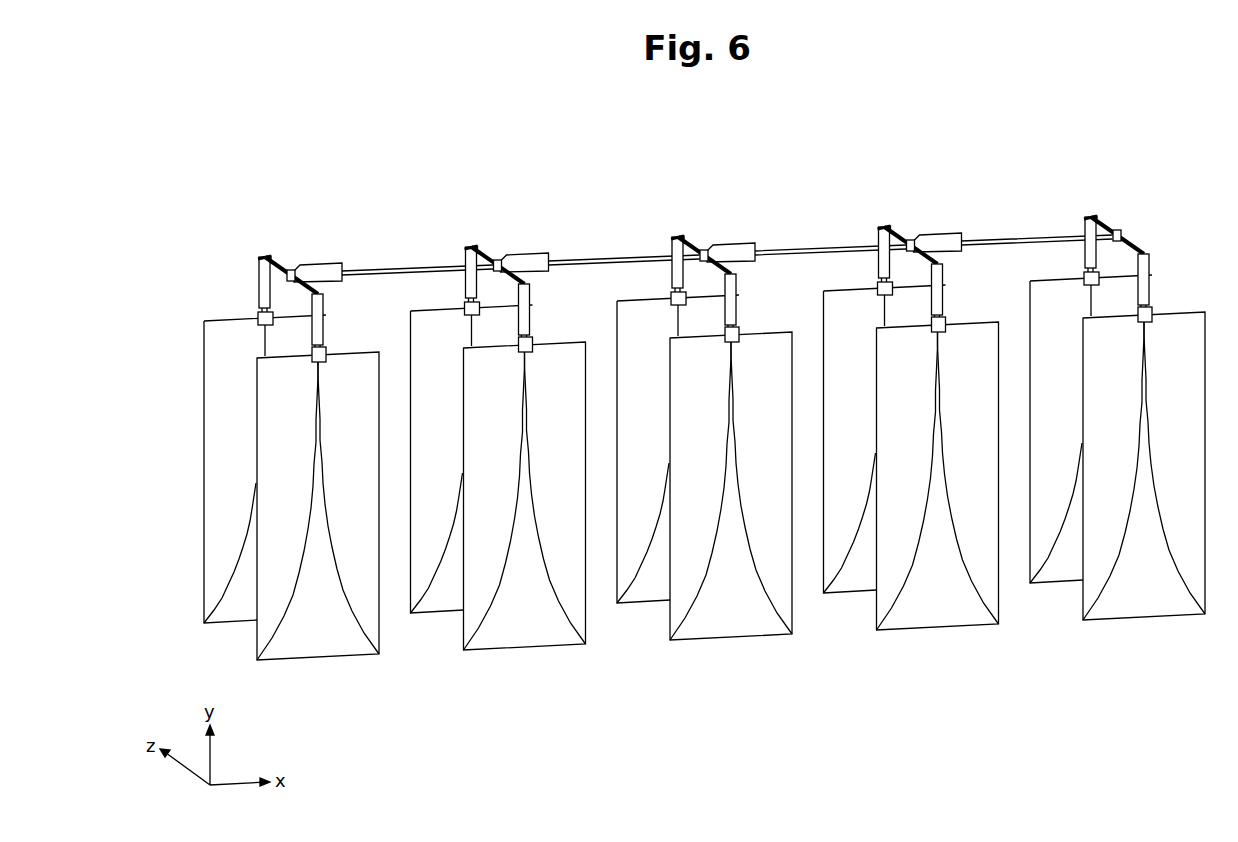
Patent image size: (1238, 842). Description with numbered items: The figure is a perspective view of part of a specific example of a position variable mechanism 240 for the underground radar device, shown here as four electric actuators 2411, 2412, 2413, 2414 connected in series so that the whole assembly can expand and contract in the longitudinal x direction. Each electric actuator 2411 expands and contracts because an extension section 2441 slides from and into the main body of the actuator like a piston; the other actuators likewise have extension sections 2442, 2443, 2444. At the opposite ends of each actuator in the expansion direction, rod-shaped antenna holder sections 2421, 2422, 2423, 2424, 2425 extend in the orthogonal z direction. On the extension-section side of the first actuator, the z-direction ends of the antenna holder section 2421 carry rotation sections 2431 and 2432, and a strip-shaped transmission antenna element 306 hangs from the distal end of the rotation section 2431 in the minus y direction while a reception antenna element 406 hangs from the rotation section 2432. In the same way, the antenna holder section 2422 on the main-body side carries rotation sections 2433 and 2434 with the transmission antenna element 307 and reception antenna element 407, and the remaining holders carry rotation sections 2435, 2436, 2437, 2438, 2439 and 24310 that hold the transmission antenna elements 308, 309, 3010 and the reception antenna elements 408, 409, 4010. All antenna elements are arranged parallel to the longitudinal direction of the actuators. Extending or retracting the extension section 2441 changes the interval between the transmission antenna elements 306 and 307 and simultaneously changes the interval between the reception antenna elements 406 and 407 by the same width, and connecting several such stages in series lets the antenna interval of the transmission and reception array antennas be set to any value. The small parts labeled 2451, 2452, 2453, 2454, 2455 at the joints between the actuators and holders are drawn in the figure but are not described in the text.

The position variable mechanism 240 is at (632, 143).
The transmission antenna element 3010 is at (318, 539).
The transmission antenna element 309 is at (525, 529).
The transmission antenna element 308 is at (731, 519).
The transmission antenna element 307 is at (938, 509).
The transmission antenna element 306 is at (1144, 499).
The reception antenna element 4010 is at (265, 503).
The reception antenna element 409 is at (472, 493).
The reception antenna element 408 is at (678, 483).
The reception antenna element 407 is at (885, 473).
The reception antenna element 406 is at (1091, 463).
The electric actuator 2411 is at (1013, 219).
The electric actuator 2412 is at (806, 229).
The electric actuator 2413 is at (600, 239).
The electric actuator 2414 is at (393, 249).
The antenna holder section 2421 is at (1112, 199).
The antenna holder section 2422 is at (906, 209).
The antenna holder section 2423 is at (699, 219).
The antenna holder section 2424 is at (493, 229).
The antenna holder section 2425 is at (286, 239).
The rotation section 2431 is at (1184, 288).
The rotation section 2432 is at (1051, 251).
The rotation section 2433 is at (978, 298).
The rotation section 2434 is at (845, 261).
The rotation section 2435 is at (771, 308).
The rotation section 2436 is at (638, 271).
The rotation section 2437 is at (565, 318).
The rotation section 2438 is at (432, 281).
The rotation section 2439 is at (358, 328).
The rotation section 24310 is at (224, 290).
The extension section 2441 is at (1067, 197).
The extension section 2442 is at (861, 207).
The extension section 2443 is at (654, 217).
The extension section 2444 is at (448, 227).
The joint 2451 is at (1135, 211).
The joint 2452 is at (929, 221).
The joint 2453 is at (722, 231).
The joint 2454 is at (516, 241).
The joint 2455 is at (309, 251).